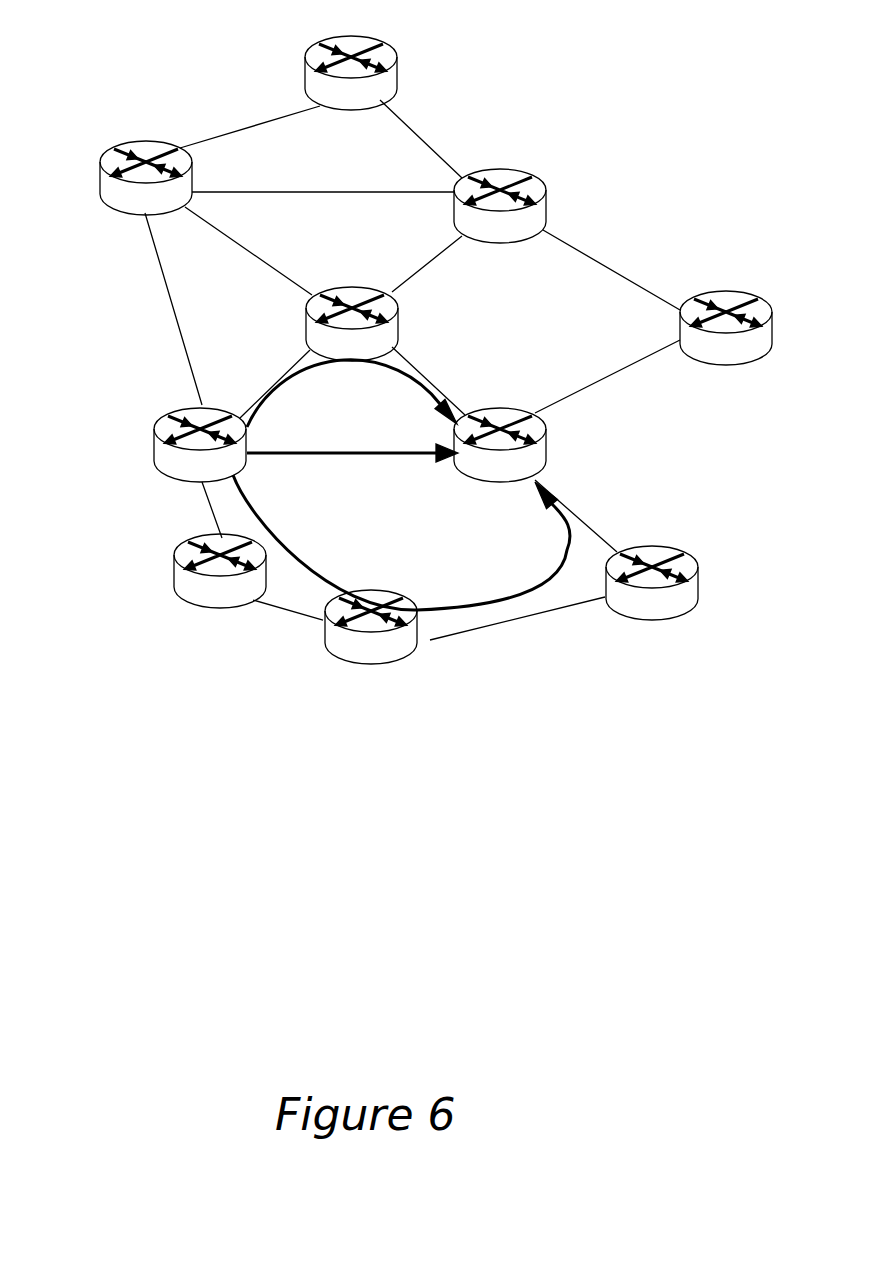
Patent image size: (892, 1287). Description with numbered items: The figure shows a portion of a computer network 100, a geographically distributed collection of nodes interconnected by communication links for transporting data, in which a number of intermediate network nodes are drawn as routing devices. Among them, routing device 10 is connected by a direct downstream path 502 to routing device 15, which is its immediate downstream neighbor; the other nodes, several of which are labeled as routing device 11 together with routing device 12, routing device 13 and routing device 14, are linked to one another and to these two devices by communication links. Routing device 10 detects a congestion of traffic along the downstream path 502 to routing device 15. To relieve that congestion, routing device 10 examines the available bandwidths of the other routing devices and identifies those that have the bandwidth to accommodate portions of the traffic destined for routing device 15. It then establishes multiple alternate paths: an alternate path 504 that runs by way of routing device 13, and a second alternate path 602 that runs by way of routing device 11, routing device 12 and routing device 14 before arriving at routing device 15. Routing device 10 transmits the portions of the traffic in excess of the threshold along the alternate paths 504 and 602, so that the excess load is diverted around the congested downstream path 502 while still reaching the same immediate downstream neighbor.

The computer network 100 is at (590, 86).
The routing device 11 is at (436, 322).
The routing device 10 is at (200, 445).
The routing device 12 is at (371, 627).
The routing device 13 is at (352, 324).
The routing device 14 is at (652, 583).
The routing device 15 is at (500, 445).
The downstream path 502 is at (352, 464).
The alternate path 504 is at (418, 363).
The alternate path 602 is at (305, 560).